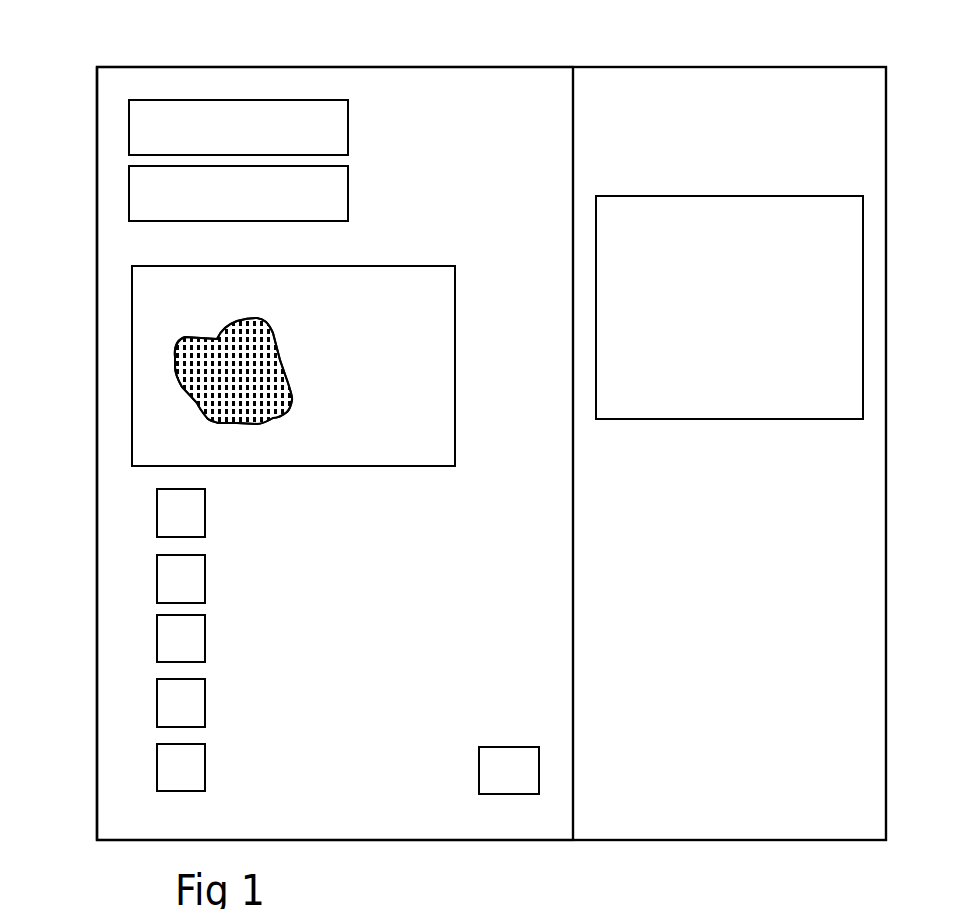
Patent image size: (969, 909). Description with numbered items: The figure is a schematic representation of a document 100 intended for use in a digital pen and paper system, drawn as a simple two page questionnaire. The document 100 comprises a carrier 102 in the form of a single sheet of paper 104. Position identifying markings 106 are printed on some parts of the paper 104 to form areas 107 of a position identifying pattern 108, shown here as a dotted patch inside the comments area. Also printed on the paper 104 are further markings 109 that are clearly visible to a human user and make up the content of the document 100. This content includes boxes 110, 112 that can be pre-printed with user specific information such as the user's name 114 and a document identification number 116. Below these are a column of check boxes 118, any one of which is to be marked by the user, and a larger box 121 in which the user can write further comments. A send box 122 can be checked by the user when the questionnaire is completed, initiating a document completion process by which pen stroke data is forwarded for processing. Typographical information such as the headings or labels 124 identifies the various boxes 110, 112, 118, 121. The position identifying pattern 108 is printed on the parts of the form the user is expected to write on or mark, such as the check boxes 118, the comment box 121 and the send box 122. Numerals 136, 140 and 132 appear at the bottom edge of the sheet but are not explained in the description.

The user interface window 100 is at (405, 95).
The display panel 104 is at (122, 86).
The form 102 is at (112, 140).
The name field 110 is at (348, 127).
The name entry 114 is at (138, 131).
The identifier field 112 is at (348, 193).
The identifier entry 116 is at (294, 200).
The comments box 108 is at (205, 421).
The drawn mark 106 is at (252, 363).
The mark outline 107 is at (292, 408).
The rating check box 109 is at (157, 514).
The rating check boxes 118 is at (157, 579).
The rating labels 124 is at (352, 579).
The further comments box 121 is at (731, 420).
The send button 122 is at (539, 771).
The input device 136 is at (411, 891).
The input device 140 is at (566, 891).
The input device 132 is at (707, 891).